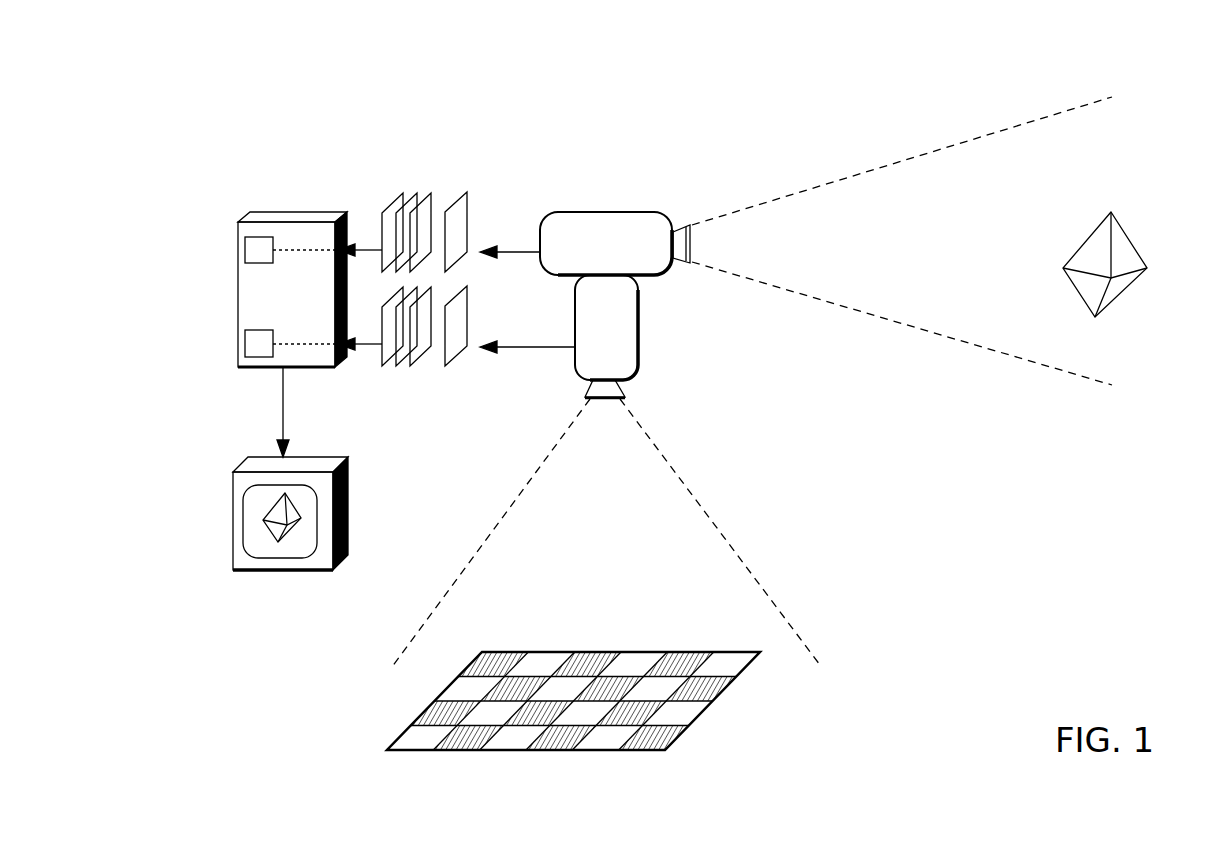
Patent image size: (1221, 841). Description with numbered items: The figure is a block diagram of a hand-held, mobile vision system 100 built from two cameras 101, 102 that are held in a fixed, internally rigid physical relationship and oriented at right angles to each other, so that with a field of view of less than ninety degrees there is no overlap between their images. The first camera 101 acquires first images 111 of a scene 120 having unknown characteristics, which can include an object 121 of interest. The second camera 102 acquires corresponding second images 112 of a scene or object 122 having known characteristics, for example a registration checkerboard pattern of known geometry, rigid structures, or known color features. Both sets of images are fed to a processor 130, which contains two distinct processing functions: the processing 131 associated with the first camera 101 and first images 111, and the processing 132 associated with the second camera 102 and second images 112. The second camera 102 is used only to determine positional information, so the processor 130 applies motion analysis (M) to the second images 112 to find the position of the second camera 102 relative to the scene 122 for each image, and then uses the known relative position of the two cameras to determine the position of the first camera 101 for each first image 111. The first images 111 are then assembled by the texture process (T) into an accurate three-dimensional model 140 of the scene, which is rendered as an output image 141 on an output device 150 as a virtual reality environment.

The vision system 100 is at (869, 467).
The first camera 101 is at (575, 211).
The second camera 102 is at (638, 333).
The first images 111 is at (422, 183).
The second images 112 is at (405, 372).
The scene 120 is at (1017, 203).
The object 121 is at (1135, 281).
The scene with known characteristics 122 is at (710, 700).
The processor 130 is at (300, 216).
The processing for first images 131 is at (245, 250).
The processing for second images 132 is at (245, 343).
The 3D model 140 is at (292, 511).
The output image 141 is at (258, 535).
The output device 150 is at (288, 575).